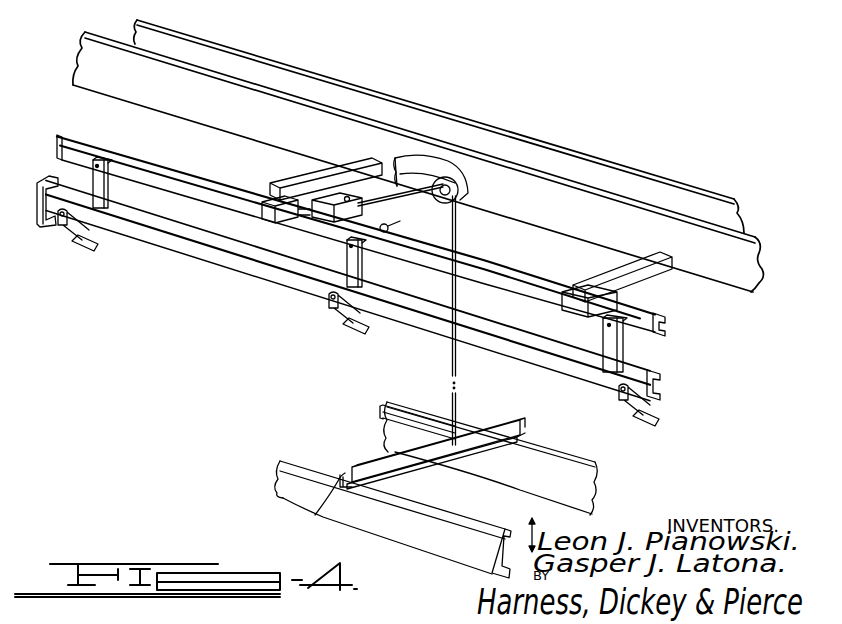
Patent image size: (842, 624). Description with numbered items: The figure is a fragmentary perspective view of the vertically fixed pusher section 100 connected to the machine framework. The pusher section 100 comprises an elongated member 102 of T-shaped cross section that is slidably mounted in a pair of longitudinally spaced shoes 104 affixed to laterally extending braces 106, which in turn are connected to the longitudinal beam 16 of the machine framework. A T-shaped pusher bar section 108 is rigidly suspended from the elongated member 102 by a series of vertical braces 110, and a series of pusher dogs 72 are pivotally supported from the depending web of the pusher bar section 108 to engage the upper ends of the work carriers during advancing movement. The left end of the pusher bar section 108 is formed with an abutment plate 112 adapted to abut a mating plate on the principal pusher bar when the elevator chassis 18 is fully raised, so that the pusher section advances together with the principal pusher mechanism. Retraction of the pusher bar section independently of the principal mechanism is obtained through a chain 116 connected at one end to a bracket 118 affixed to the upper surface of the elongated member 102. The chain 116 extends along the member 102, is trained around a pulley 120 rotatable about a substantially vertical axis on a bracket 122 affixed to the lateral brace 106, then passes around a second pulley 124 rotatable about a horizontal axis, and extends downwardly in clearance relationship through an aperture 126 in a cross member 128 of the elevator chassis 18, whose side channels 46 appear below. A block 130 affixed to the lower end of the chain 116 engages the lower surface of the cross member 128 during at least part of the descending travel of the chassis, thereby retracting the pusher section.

The longitudinal beam 16 is at (380, 137).
The elevator chassis 18 is at (268, 472).
The side channels 46 is at (573, 485).
The pusher dogs 72 is at (62, 240).
The pusher section 100 is at (184, 167).
The elongated member 102 is at (505, 273).
The shoes 104 is at (270, 212).
The lateral braces 106 is at (290, 178).
The pusher bar section 108 is at (213, 263).
The vertical braces 110 is at (110, 190).
The abutment plate 112 is at (45, 180).
The chain 116 is at (383, 193).
The bracket 118 is at (390, 229).
The pulley 120 is at (345, 198).
The bracket 122 is at (335, 193).
The second pulley 124 is at (453, 195).
The aperture 126 is at (392, 468).
The cross member 128 is at (347, 485).
The block 130 is at (388, 423).